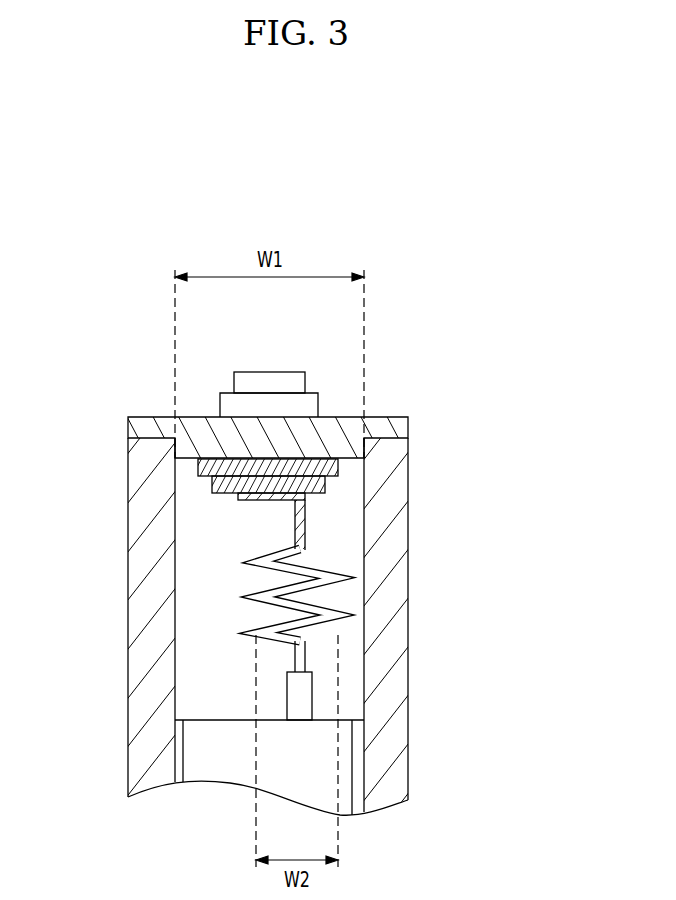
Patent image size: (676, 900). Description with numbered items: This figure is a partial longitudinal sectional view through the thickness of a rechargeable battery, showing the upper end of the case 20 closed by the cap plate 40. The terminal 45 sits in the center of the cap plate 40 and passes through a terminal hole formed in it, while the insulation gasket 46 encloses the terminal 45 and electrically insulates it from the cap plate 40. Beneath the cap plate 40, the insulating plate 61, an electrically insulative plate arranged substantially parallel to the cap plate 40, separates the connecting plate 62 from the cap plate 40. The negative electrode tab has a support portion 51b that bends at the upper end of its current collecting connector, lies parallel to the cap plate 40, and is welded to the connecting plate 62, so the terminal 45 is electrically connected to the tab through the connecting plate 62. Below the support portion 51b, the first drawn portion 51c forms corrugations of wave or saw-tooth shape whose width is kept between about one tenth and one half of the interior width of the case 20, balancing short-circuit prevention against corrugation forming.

The case 20 is at (395, 463).
The cap plate 40 is at (402, 425).
The terminal 45 is at (289, 380).
The insulation gasket 46 is at (247, 407).
The insulating plate 61 is at (200, 473).
The connecting plate 62 is at (212, 490).
The support portion 51b is at (250, 500).
The first drawn portion 51c is at (338, 582).